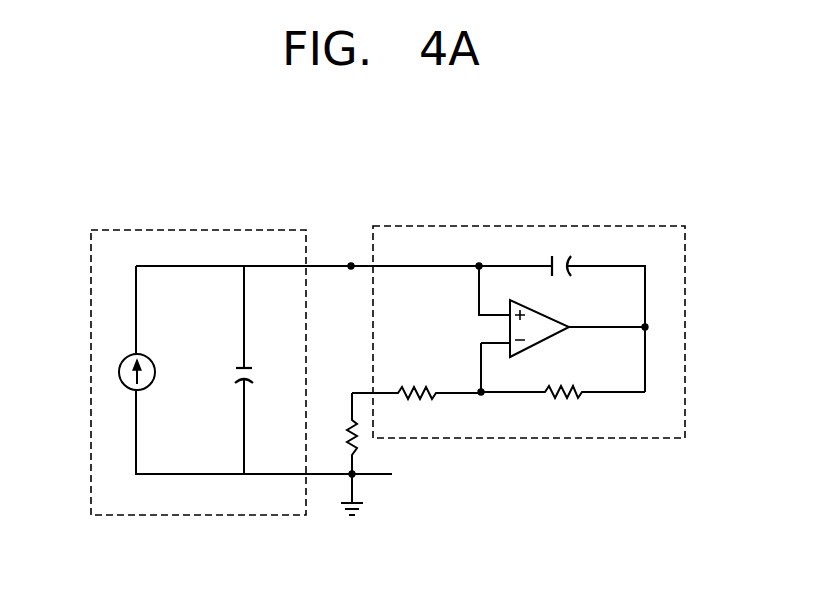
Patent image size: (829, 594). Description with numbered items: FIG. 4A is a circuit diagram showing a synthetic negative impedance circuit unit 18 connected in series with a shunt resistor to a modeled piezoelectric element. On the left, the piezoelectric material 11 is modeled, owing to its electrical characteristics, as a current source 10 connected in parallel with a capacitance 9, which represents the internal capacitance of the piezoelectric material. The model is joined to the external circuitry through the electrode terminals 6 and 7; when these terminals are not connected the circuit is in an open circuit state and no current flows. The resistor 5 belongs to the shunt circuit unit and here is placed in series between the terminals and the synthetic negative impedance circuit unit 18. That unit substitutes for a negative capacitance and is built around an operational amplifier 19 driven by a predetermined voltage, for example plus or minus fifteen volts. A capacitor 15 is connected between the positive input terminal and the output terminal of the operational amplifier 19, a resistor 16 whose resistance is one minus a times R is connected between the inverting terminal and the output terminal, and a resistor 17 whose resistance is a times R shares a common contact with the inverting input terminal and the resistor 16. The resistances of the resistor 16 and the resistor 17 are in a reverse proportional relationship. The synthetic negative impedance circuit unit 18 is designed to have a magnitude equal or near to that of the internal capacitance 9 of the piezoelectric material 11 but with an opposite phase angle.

The resistor 5 is at (349, 420).
The electrode terminal 6 is at (350, 265).
The electrode terminal 7 is at (368, 474).
The capacitance 9 is at (253, 364).
The current source 10 is at (150, 356).
The piezoelectric material 11 is at (178, 228).
The capacitor 15 is at (549, 256).
The resistor 16 is at (568, 386).
The resistor 17 is at (412, 388).
The synthetic negative impedance circuit unit 18 is at (545, 226).
The operational amplifier 19 is at (556, 324).